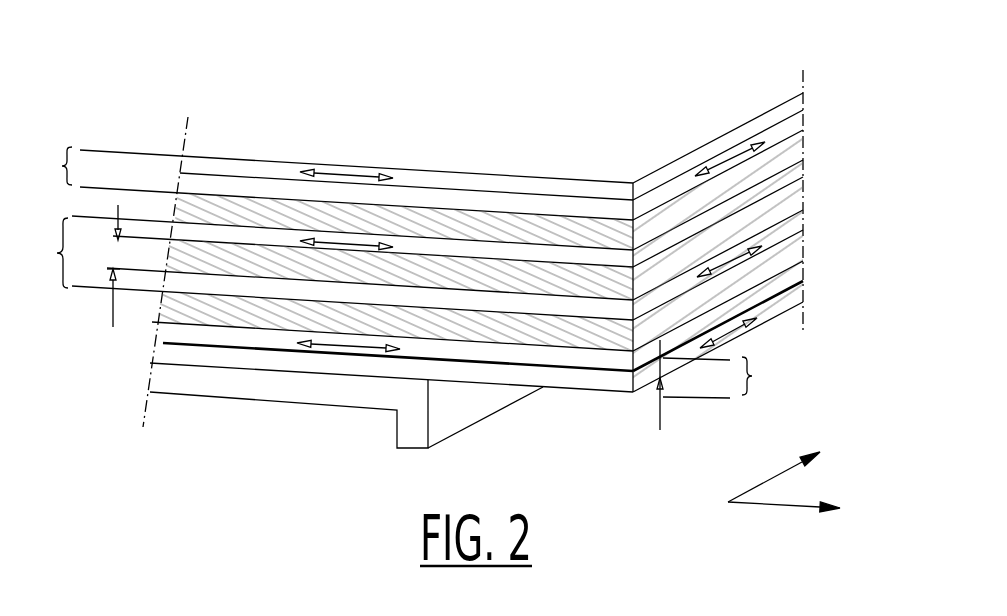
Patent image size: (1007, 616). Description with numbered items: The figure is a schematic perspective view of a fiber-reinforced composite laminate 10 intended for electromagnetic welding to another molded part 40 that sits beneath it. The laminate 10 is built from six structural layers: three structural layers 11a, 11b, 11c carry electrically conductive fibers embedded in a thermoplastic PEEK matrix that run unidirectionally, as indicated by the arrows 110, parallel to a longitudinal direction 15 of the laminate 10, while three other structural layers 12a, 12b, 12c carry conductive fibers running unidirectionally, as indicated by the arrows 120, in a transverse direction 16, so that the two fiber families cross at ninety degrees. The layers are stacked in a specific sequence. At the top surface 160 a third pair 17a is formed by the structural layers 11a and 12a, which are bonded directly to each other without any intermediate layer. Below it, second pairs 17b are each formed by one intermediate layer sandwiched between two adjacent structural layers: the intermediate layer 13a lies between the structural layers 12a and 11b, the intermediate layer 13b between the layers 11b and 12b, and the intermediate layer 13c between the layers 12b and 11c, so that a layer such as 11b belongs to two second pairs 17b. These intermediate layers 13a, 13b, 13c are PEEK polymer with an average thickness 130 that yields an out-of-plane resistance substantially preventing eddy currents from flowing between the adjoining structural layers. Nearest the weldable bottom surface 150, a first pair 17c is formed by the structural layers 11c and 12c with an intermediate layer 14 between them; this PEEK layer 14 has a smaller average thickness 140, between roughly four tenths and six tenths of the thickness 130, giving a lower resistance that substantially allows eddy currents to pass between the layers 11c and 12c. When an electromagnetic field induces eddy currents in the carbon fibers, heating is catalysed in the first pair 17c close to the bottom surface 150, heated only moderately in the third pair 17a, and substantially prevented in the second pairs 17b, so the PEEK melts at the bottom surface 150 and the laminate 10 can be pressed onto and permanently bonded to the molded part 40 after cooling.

The laminate 10 is at (176, 83).
The structural layer 11a is at (248, 166).
The structural layer 11b is at (227, 237).
The structural layer 11c is at (178, 333).
The structural layer 12a is at (783, 132).
The structural layer 12b is at (783, 233).
The structural layer 12c is at (783, 307).
The intermediate layer 13a is at (180, 206).
The intermediate layer 13b is at (511, 278).
The intermediate layer 13c is at (178, 305).
The intermediate layer 14 is at (212, 345).
The longitudinal direction 15 is at (777, 507).
The transverse direction 16 is at (752, 487).
The third pair 17a is at (44, 166).
The second pair 17b is at (38, 253).
The first pair 17c is at (764, 377).
The molded part 40 is at (265, 390).
The arrows 110 is at (363, 172).
The arrows 120 is at (718, 168).
The average thickness 130 is at (110, 307).
The average thickness 140 is at (660, 414).
The bottom surface 150 is at (577, 392).
The top surface 160 is at (645, 152).